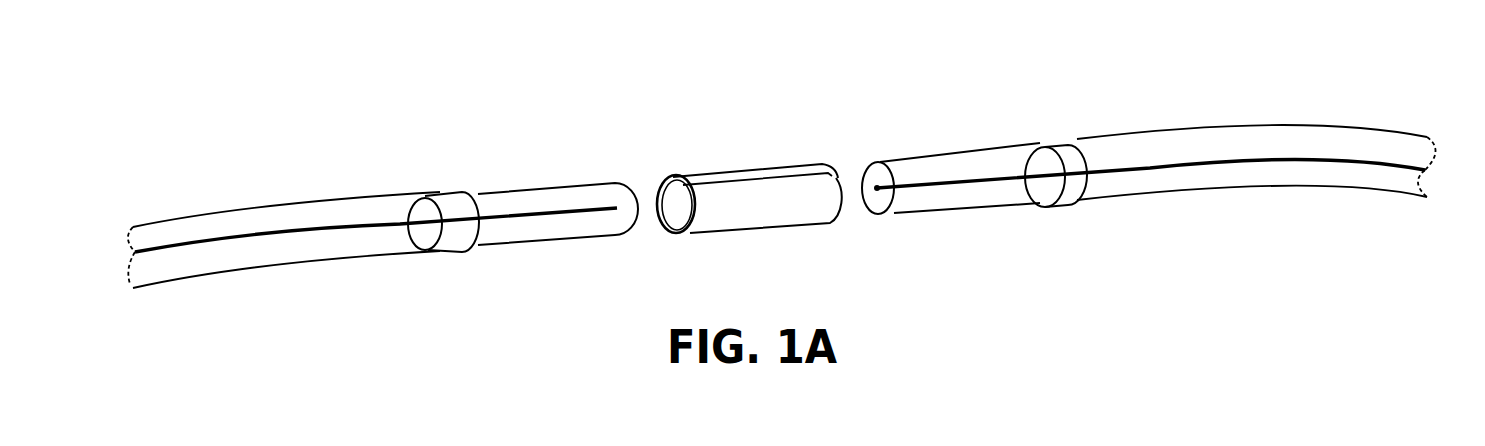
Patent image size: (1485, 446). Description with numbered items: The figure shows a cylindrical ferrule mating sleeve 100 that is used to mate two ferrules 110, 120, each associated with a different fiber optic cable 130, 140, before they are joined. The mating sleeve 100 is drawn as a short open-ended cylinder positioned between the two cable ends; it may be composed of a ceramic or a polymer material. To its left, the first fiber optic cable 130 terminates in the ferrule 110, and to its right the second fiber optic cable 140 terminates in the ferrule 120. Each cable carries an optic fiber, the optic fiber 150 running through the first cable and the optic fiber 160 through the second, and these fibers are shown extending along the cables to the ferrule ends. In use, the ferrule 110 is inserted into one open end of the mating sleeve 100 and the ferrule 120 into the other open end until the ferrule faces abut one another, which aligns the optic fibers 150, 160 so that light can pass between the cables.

The cylindrical ferrule mating sleeve 100 is at (750, 154).
The ferrule 110 is at (544, 169).
The ferrule 120 is at (957, 136).
The fiber optic cable 130 is at (357, 181).
The fiber optic cable 140 is at (1117, 117).
The optic fiber 150 is at (217, 222).
The optic fiber 160 is at (1238, 139).